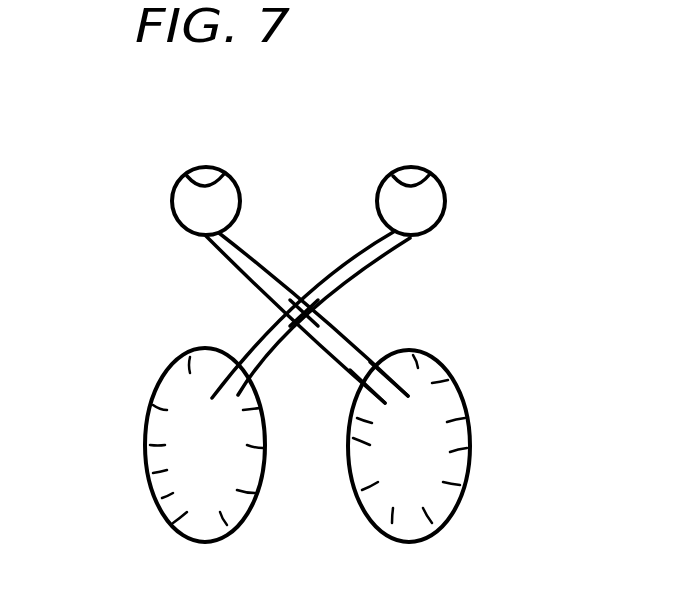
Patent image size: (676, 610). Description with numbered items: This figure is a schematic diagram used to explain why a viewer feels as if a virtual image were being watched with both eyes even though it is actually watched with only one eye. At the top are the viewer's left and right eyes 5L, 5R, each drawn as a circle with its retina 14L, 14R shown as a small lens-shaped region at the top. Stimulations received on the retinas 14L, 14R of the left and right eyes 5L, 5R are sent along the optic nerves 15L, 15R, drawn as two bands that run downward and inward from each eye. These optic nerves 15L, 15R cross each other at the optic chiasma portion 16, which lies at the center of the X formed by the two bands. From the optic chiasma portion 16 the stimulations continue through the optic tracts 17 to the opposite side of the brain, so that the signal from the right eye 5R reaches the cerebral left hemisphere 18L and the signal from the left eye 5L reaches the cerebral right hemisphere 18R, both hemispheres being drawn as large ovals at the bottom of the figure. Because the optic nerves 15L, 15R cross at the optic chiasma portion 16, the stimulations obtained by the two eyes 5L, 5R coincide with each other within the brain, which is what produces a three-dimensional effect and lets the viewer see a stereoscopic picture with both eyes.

The left eye 5L is at (213, 169).
The right eye 5R is at (412, 168).
The retina of left eye 14L is at (182, 232).
The retina of right eye 14R is at (445, 205).
The left optic nerve 15L is at (238, 270).
The right optic nerve 15R is at (375, 263).
The optic chiasma portion 16 is at (313, 310).
The optic tracts 17 is at (380, 348).
The cerebral left hemisphere 18L is at (150, 472).
The cerebral right hemisphere 18R is at (470, 472).